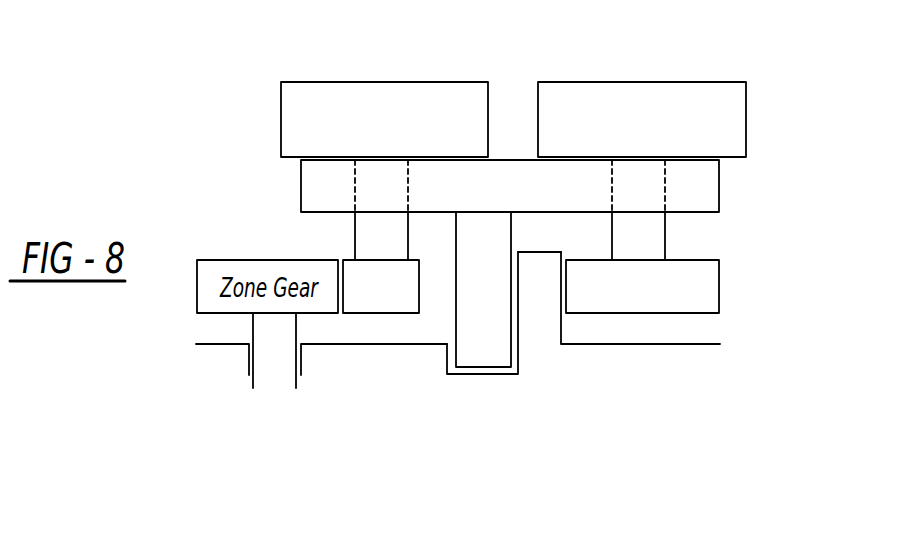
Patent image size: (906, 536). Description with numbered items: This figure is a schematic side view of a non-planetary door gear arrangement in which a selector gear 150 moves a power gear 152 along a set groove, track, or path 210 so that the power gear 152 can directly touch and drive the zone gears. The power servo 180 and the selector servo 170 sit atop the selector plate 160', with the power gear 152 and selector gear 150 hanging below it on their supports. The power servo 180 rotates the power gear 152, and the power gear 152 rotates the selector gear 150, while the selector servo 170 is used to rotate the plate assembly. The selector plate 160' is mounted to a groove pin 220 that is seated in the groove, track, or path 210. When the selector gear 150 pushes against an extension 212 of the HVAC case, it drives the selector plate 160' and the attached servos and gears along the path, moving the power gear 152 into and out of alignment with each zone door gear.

The power servo 180 is at (332, 102).
The selector servo 170 is at (670, 105).
The selector plate 160' is at (553, 205).
The selector gear 150 is at (700, 286).
The power gear 152 is at (383, 293).
The groove, track, or path 210 is at (487, 374).
The extension of the HVAC case 212 is at (537, 253).
The groove pin 220 is at (480, 322).